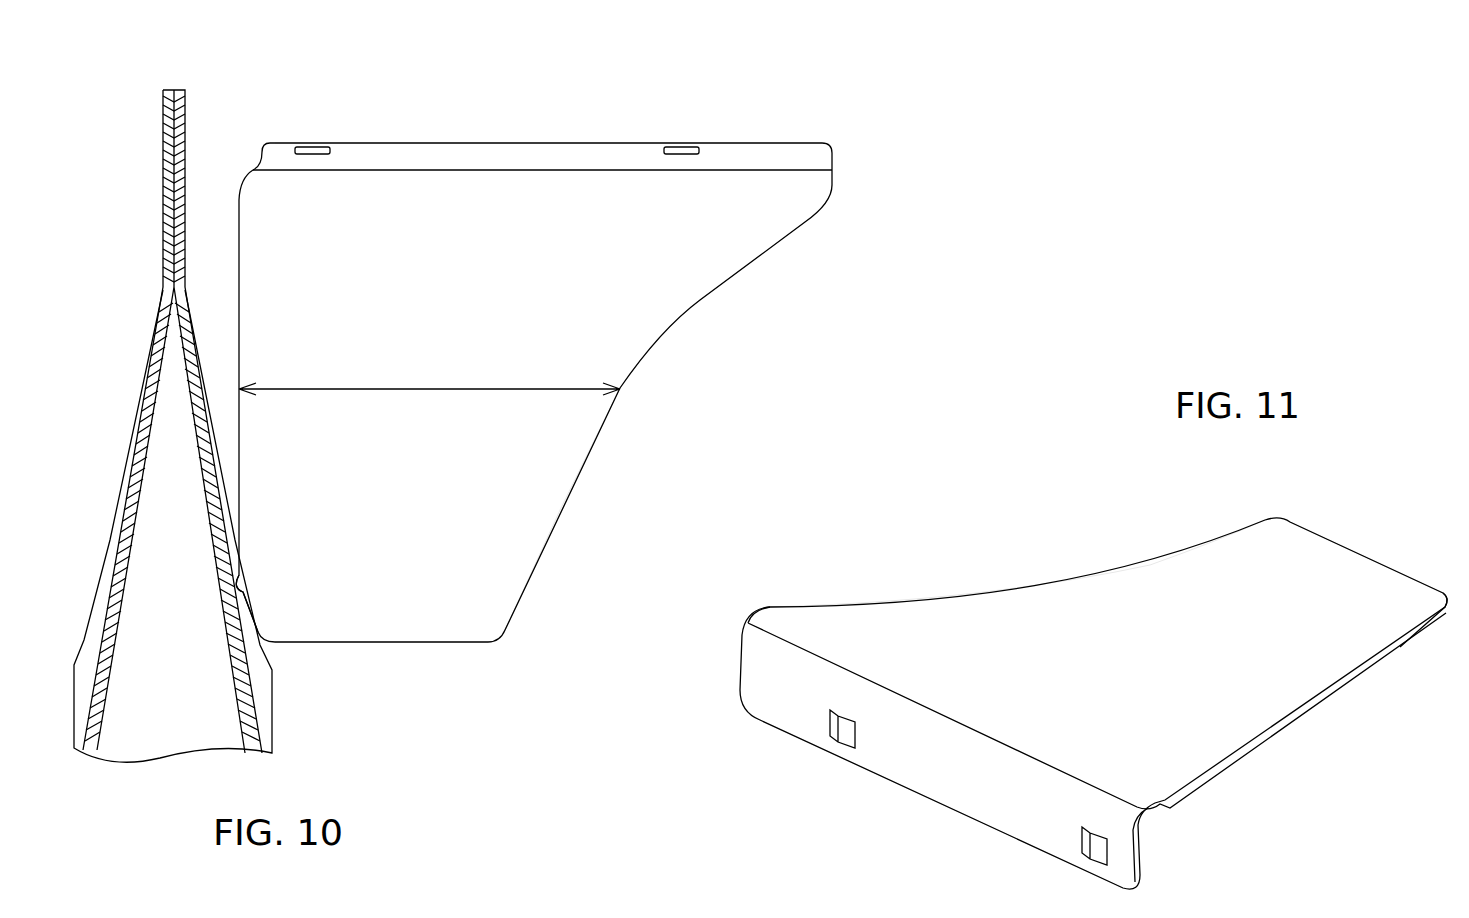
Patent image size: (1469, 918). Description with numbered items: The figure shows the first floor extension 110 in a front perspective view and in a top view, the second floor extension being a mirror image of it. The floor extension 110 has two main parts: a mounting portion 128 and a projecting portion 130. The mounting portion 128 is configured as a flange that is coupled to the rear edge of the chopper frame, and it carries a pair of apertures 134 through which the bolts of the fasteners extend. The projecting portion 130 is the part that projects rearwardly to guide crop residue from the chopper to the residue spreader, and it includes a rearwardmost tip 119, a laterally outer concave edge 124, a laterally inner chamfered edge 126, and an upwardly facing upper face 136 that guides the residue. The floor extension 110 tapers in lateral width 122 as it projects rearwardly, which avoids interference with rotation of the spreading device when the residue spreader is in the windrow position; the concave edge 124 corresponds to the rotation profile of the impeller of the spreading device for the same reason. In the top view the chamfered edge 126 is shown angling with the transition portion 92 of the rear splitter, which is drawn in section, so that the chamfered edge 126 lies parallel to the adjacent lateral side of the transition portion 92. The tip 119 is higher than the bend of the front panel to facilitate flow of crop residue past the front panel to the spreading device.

In FIG. 10, the transition portion 92 is at (238, 627).
In FIG. 10, the floor extension 110 is at (628, 460).
In FIG. 11, the floor extension 110 is at (990, 451).
In FIG. 10, the rearwardmost tip 119 is at (390, 642).
In FIG. 11, the rearwardmost tip 119 is at (1357, 550).
In FIG. 10, the lateral width 122 is at (404, 387).
In FIG. 10, the laterally outer concave edge 124 is at (700, 300).
In FIG. 11, the laterally outer concave edge 124 is at (941, 600).
In FIG. 10, the laterally inner chamfered edge 126 is at (245, 570).
In FIG. 11, the laterally inner chamfered edge 126 is at (1420, 630).
In FIG. 10, the mounting portion 128 is at (500, 160).
In FIG. 11, the mounting portion 128 is at (928, 757).
In FIG. 10, the projecting portion 130 is at (505, 483).
In FIG. 11, the projecting portion 130 is at (1182, 585).
In FIG. 10, the aperture 134 is at (312, 150).
In FIG. 11, the aperture 134 is at (830, 716).
In FIG. 10, the upper face 136 is at (478, 553).
In FIG. 11, the upper face 136 is at (1086, 613).